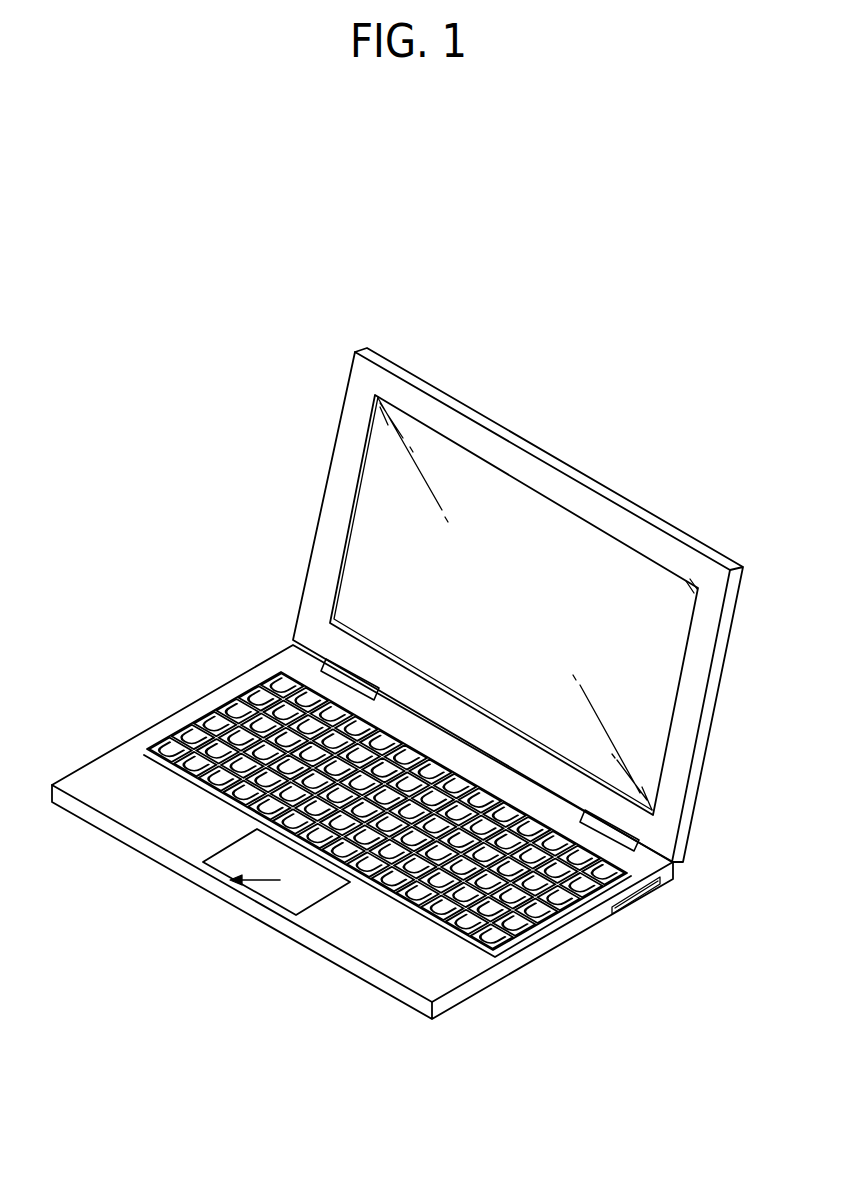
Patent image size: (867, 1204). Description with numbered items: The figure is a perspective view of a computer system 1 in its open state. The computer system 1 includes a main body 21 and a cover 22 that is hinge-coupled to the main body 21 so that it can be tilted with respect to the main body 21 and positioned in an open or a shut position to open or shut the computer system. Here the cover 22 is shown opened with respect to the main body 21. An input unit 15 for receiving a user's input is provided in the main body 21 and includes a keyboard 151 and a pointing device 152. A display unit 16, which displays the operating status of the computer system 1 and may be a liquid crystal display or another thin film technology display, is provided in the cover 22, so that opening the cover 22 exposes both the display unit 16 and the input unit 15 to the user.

The computer system 1 is at (675, 420).
The input unit 15 is at (161, 614).
The keyboard 151 is at (257, 715).
The pointing device 152 is at (242, 854).
The display unit 16 is at (390, 510).
The main body 21 is at (587, 923).
The cover 22 is at (703, 763).